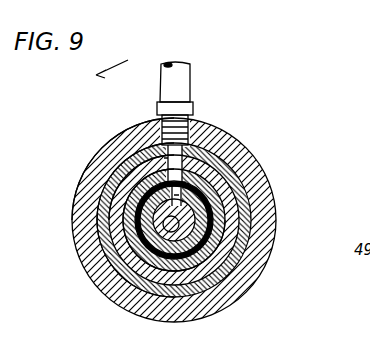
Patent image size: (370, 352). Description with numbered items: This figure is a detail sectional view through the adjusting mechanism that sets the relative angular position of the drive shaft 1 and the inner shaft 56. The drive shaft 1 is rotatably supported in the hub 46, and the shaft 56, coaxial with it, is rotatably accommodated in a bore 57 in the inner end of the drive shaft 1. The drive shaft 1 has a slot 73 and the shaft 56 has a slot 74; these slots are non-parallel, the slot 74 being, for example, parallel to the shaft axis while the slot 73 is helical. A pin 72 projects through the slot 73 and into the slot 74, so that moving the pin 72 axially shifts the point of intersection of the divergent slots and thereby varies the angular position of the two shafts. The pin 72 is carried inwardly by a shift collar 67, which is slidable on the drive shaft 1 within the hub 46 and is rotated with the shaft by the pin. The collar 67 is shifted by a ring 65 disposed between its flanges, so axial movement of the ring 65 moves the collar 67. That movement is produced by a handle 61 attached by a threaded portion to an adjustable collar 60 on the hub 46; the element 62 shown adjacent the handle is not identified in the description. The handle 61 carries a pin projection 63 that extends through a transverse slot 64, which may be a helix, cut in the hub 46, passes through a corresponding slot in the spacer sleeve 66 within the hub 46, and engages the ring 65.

The drive shaft 1 is at (250, 197).
The hub 46 is at (225, 160).
The shaft 56 is at (235, 212).
The bore 57 is at (215, 244).
The adjustable collar 60 is at (200, 127).
The handle 61 is at (192, 82).
The fitting flange 62 is at (194, 110).
The pin projection 63 is at (215, 142).
The transverse slot 64 is at (143, 147).
The ring 65 is at (138, 173).
The spacer sleeve 66 is at (115, 205).
The shift collar 67 is at (128, 228).
The pin 72 is at (237, 173).
The slot 73 is at (242, 185).
The slot 74 is at (122, 255).